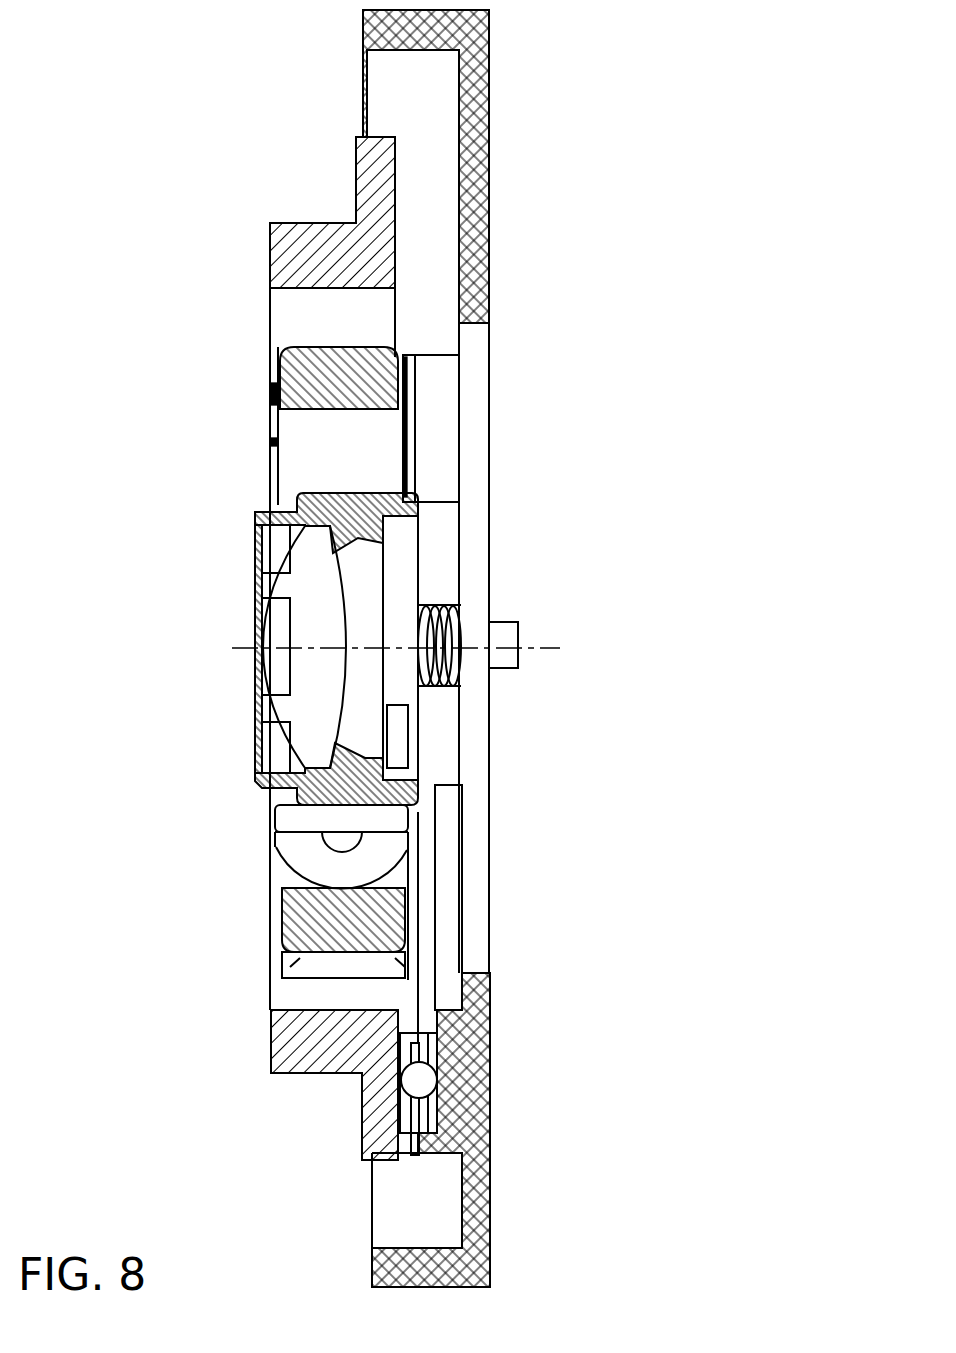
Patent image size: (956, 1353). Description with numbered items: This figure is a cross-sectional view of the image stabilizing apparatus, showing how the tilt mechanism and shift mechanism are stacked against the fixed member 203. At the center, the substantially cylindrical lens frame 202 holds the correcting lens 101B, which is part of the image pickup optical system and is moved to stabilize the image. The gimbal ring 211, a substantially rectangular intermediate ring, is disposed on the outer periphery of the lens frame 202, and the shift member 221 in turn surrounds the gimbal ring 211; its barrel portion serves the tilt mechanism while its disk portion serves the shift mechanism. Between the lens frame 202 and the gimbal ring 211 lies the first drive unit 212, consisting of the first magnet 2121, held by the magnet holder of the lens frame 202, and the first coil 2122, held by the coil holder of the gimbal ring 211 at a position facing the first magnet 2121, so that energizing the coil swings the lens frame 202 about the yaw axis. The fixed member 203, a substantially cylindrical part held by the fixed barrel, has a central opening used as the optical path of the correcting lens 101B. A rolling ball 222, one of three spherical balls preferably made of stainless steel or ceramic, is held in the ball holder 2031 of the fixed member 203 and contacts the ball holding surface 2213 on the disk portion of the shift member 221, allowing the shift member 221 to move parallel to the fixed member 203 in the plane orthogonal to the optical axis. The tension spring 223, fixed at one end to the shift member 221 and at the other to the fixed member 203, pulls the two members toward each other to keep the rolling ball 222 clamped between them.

The fixed member 203 is at (463, 190).
The shift member 221 is at (285, 262).
The gimbal ring 211 is at (272, 391).
The lens frame 202 is at (258, 515).
The correcting lens 101B is at (262, 683).
The spring 223 is at (420, 605).
The first drive unit 212 is at (165, 805).
The first magnet 2121 is at (285, 815).
The first coil 2122 is at (283, 848).
The rolling ball 222 is at (420, 1080).
The ball holder 2031 is at (415, 1117).
The ball holding surface 2213 is at (383, 1113).